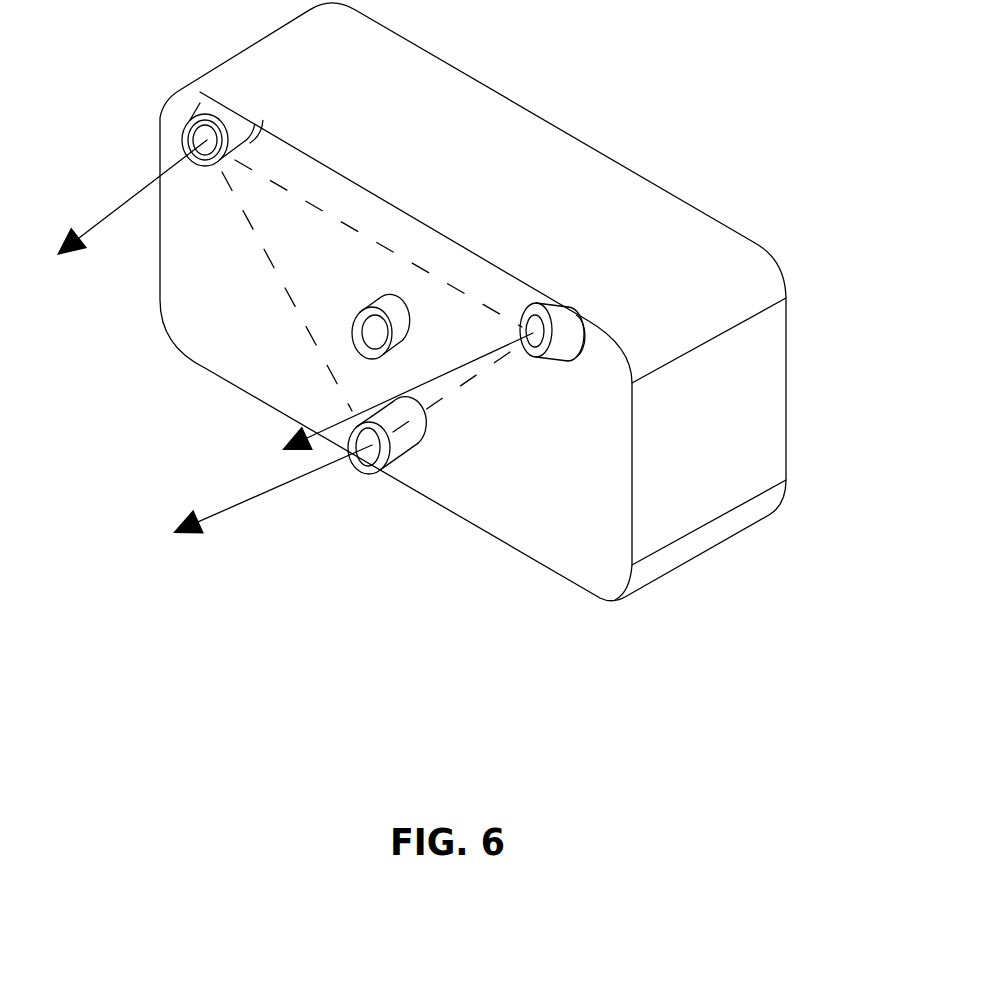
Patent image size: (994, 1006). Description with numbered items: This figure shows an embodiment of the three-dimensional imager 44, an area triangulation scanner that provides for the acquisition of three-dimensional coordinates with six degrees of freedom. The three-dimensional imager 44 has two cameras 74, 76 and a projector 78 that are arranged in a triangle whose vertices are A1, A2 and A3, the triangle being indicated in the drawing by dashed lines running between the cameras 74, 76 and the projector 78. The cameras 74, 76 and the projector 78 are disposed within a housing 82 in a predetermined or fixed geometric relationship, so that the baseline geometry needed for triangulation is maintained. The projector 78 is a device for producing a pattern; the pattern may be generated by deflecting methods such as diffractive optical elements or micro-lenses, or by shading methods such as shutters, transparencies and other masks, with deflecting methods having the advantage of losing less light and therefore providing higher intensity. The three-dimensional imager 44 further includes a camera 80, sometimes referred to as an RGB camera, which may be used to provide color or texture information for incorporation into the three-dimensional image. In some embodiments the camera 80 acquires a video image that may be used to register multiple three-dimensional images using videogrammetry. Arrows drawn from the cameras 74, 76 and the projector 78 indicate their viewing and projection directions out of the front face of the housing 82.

The housing 82 is at (638, 173).
The camera 76 is at (289, 109).
The camera 74 is at (615, 302).
The projector 78 is at (412, 457).
The camera 80 is at (336, 312).
The 3D imager 44 is at (336, 508).
The triangle vertex A1 is at (287, 297).
The triangle vertex A2 is at (477, 377).
The triangle vertex A3 is at (350, 224).